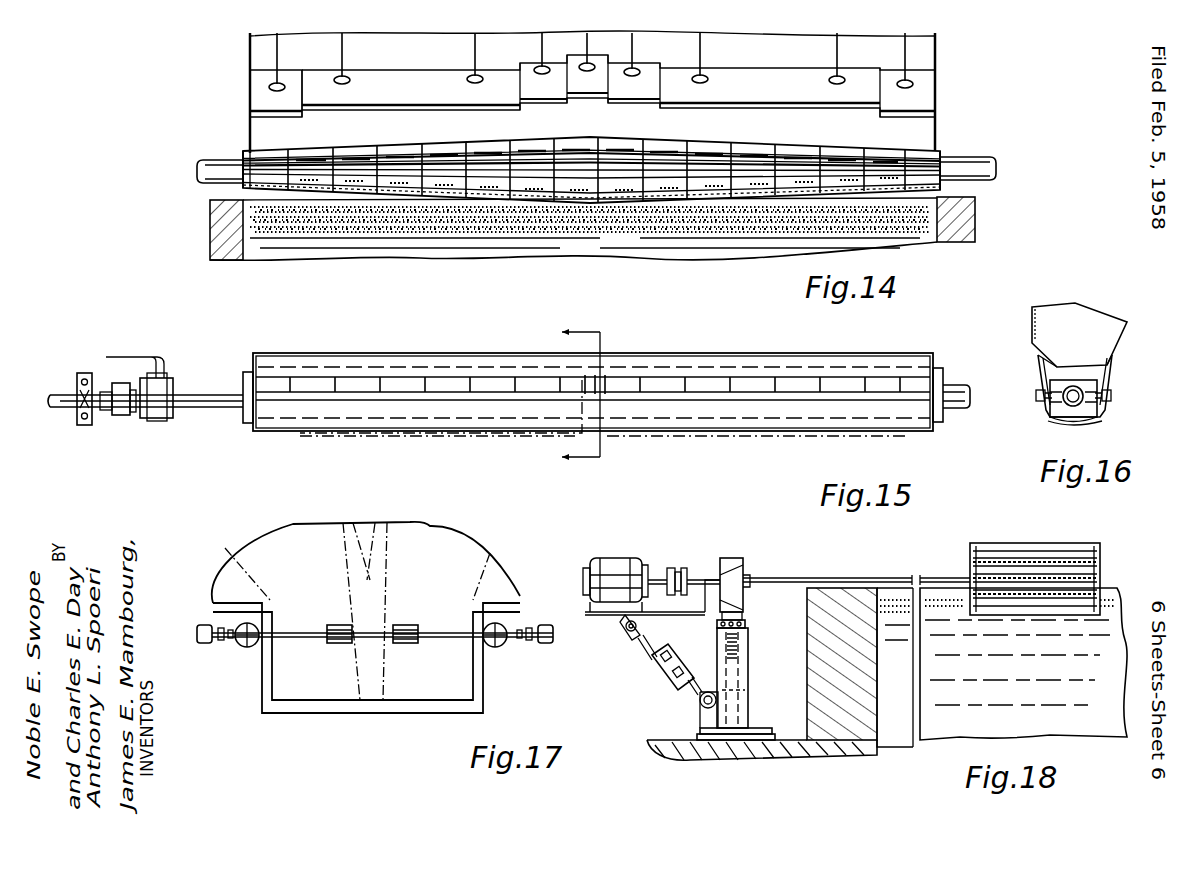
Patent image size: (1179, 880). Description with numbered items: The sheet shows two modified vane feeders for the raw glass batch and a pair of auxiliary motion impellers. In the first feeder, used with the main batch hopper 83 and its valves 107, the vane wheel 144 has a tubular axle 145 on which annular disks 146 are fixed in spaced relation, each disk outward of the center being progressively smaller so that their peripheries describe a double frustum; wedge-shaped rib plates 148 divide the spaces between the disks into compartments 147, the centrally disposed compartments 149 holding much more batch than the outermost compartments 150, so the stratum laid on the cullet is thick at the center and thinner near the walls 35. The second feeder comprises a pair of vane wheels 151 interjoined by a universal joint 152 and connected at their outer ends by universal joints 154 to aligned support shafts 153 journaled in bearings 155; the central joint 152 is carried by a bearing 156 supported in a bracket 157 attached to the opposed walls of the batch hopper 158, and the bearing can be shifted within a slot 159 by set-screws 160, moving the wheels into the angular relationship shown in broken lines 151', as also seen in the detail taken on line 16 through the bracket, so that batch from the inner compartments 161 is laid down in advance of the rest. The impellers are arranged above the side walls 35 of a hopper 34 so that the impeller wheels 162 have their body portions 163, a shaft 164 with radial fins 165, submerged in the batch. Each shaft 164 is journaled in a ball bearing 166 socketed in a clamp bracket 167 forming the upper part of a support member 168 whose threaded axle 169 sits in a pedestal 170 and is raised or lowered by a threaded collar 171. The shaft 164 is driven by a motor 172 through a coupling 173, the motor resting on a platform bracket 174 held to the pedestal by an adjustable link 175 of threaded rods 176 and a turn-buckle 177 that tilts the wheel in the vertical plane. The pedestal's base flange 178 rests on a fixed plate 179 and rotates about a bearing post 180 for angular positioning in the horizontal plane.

In FIG. 14, the main batch hopper 83 is at (248, 80).
In FIG. 14, the valves 107 is at (527, 78).
In FIG. 14, the vane wheel 144 is at (352, 150).
In FIG. 14, the tubular axle 145 is at (218, 174).
In FIG. 14, the annular disks 146 is at (503, 146).
In FIG. 14, the compartments 147 is at (520, 152).
In FIG. 14, the rib plates 148 is at (490, 184).
In FIG. 14, the centrally disposed compartments 149 is at (616, 145).
In FIG. 14, the outermost compartments 150 is at (310, 156).
In FIG. 14, the walls 35 is at (222, 225).
In FIG. 17, the walls 35 is at (265, 683).
In FIG. 18, the walls 35 is at (818, 608).
In FIG. 15, the vane wheels 151 is at (592, 382).
In FIG. 16, the vane wheels 151 is at (1082, 435).
In FIG. 15, the angularly disposed vane wheels 151' is at (602, 424).
In FIG. 15, the universal joint 152 is at (593, 380).
In FIG. 16, the universal joint 152 is at (1052, 412).
In FIG. 15, the support shafts 153 is at (55, 410).
In FIG. 15, the universal joints 154 is at (120, 418).
In FIG. 15, the bearings 155 is at (80, 375).
In FIG. 16, the bearing 156 is at (1108, 368).
In FIG. 16, the bracket 157 is at (1042, 372).
In FIG. 15, the batch hopper 158 is at (730, 362).
In FIG. 16, the batch hopper 158 is at (1033, 330).
In FIG. 16, the slot 159 is at (1098, 416).
In FIG. 16, the set-screws 160 is at (1037, 395).
In FIG. 15, the compartments 161 is at (475, 386).
In FIG. 15, the section line 16— 16 is at (586, 330).
In FIG. 17, the hopper 34 is at (320, 703).
In FIG. 17, the impeller wheels 162 is at (326, 620).
In FIG. 18, the impeller wheels 162 is at (982, 541).
In FIG. 17, the body portions 163 is at (340, 622).
In FIG. 18, the body portions 163 is at (1020, 549).
In FIG. 17, the shaft 164 is at (290, 637).
In FIG. 18, the shaft 164 is at (872, 577).
In FIG. 18, the fins 165 is at (1075, 580).
In FIG. 18, the ball bearing 166 is at (745, 570).
In FIG. 17, the clamp bracket 167 is at (246, 648).
In FIG. 18, the clamp bracket 167 is at (731, 565).
In FIG. 18, the support member 168 is at (744, 604).
In FIG. 18, the threaded axle 169 is at (740, 645).
In FIG. 18, the pedestal 170 is at (740, 670).
In FIG. 18, the threaded collar 171 is at (747, 625).
In FIG. 17, the motor 172 is at (204, 644).
In FIG. 18, the motor 172 is at (615, 575).
In FIG. 18, the coupling 173 is at (677, 566).
In FIG. 18, the platform bracket 174 is at (665, 614).
In FIG. 18, the adjustable link 175 is at (638, 641).
In FIG. 18, the threaded rods 176 is at (650, 652).
In FIG. 18, the turn-buckle 177 is at (663, 672).
In FIG. 18, the base flange 178 is at (750, 730).
In FIG. 18, the fixed plate 179 is at (770, 738).
In FIG. 18, the bearing post 180 is at (749, 690).